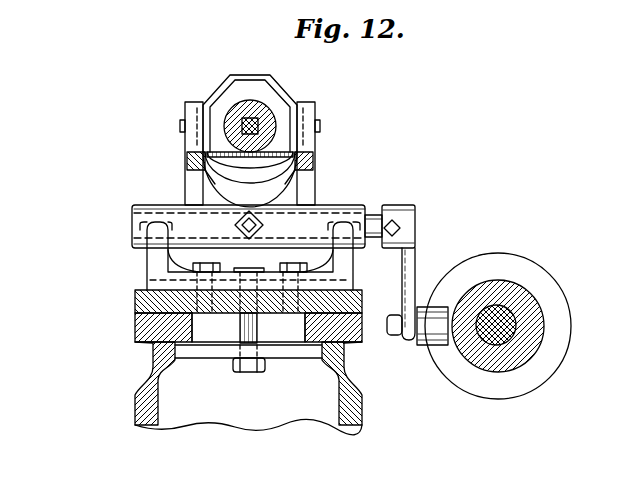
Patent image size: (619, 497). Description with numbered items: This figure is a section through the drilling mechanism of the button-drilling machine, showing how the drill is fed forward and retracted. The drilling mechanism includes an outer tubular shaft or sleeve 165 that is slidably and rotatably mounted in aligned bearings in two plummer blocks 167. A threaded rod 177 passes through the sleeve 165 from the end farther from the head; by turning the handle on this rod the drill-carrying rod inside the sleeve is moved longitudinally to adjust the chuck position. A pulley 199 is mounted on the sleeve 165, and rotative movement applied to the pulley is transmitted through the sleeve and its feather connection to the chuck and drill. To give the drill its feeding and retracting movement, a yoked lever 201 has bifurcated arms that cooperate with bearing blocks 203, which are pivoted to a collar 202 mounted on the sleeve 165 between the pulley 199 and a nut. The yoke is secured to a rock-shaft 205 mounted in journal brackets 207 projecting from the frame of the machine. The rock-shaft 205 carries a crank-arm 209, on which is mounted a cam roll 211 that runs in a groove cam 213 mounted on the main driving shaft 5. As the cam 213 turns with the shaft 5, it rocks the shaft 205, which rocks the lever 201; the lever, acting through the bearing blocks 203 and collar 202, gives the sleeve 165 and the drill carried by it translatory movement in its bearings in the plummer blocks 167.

The shaft 5 is at (507, 325).
The outer tubular shaft or sleeve 165 is at (263, 113).
The plummer block 167 is at (228, 187).
The threaded rod 177 is at (249, 121).
The pulley 199 is at (212, 93).
The yoked lever 201 is at (186, 160).
The collar 202 is at (238, 90).
The bearing block 203 is at (192, 113).
The rock-shaft 205 is at (373, 216).
The journal bracket 207 is at (347, 205).
The crank-arm 209 is at (410, 258).
The cam roll 211 is at (432, 357).
The groove cam 213 is at (553, 367).